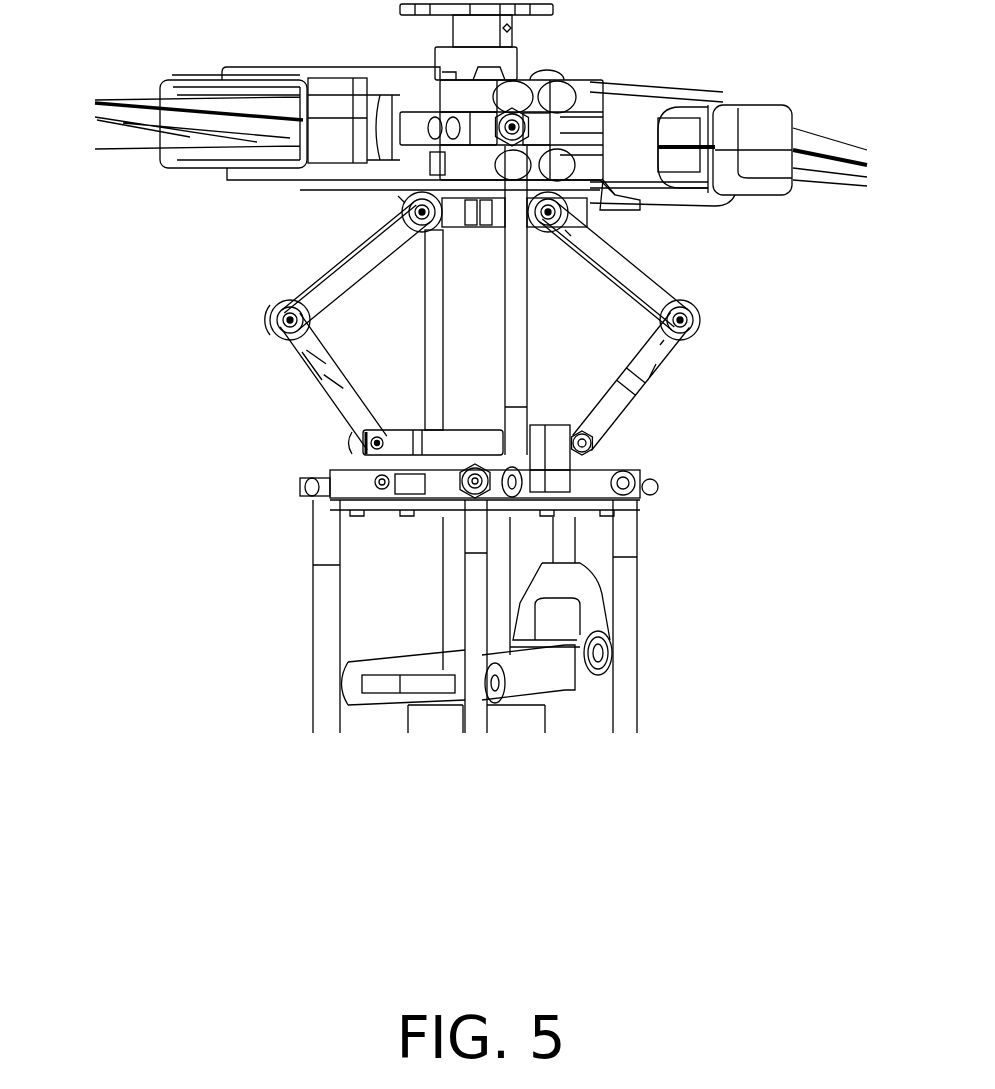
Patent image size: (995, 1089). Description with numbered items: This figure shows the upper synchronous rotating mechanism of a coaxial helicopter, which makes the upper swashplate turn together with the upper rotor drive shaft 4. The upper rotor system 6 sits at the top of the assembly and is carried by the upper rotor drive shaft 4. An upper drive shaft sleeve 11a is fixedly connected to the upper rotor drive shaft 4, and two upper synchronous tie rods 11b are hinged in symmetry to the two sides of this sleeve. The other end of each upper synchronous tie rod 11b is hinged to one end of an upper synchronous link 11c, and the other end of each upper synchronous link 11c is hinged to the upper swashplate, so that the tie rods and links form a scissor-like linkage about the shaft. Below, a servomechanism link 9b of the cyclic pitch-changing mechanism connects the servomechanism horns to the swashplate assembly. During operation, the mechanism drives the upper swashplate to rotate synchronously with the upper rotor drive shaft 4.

The upper rotor drive shaft 4 is at (475, 332).
The upper rotor system 6 is at (222, 160).
The servomechanism link 9b is at (457, 443).
The upper drive shaft sleeve 11a is at (380, 210).
The upper synchronous tie rod 11b is at (597, 255).
The upper synchronous link 11c is at (628, 373).